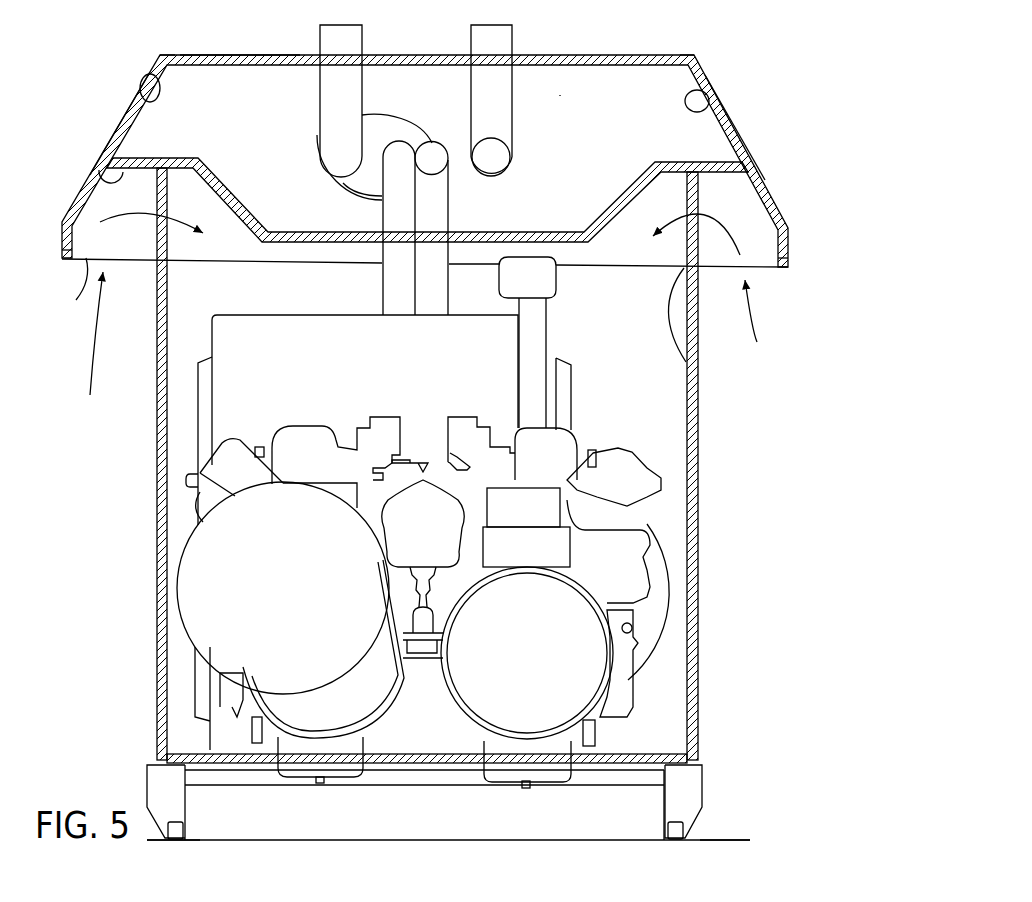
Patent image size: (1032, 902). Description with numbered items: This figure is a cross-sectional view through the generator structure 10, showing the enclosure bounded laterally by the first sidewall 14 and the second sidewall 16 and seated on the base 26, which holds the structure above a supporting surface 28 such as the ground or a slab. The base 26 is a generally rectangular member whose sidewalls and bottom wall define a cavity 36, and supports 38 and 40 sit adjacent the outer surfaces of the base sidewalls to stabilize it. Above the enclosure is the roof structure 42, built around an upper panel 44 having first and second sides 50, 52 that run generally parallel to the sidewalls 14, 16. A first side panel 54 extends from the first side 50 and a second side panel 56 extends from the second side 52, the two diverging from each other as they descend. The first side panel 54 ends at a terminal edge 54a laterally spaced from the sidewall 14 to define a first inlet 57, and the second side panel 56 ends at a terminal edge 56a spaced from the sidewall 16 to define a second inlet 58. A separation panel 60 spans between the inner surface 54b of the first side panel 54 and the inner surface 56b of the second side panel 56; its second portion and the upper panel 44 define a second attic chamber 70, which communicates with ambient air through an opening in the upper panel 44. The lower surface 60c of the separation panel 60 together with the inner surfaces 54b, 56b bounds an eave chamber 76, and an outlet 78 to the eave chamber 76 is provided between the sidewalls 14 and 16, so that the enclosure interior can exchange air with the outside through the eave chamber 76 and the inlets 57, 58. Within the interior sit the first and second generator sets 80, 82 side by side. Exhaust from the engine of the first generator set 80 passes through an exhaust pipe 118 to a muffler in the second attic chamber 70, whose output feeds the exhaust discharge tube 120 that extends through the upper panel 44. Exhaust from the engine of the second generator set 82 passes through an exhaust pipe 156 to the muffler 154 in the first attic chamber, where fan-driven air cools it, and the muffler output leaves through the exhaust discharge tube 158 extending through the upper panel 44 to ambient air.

The generator structure 10 is at (705, 901).
The first sidewall 14 is at (156, 473).
The second sidewall 16 is at (693, 497).
The base 26 is at (402, 848).
The supporting surface 28 is at (750, 840).
The cavity 36 is at (359, 826).
The support 38 is at (149, 820).
The support 40 is at (705, 822).
The roof structure 42 is at (628, 52).
The upper panel 44 is at (227, 56).
The first side 50 is at (162, 54).
The second side 52 is at (697, 56).
The first side panel 54 is at (113, 135).
The terminal edge 54a is at (57, 249).
The inner surface 54b is at (150, 75).
The second side panel 56 is at (738, 125).
The terminal edge 56a is at (784, 277).
The inner surface 56b is at (712, 110).
The first inlet 57 is at (76, 300).
The second inlet 58 is at (770, 268).
The separation panel 60 is at (614, 205).
The lower surface 60c is at (97, 178).
The second attic chamber 70 is at (641, 124).
The eave chamber 76 is at (212, 211).
The outlet 78 is at (696, 364).
The first generator set 80 is at (663, 652).
The second generator set 82 is at (178, 615).
The exhaust pipe 118 is at (438, 199).
The exhaust discharge tube 120 is at (500, 92).
The muffler 154 is at (315, 163).
The exhaust pipe 156 is at (382, 208).
The exhaust discharge tube 158 is at (335, 102).